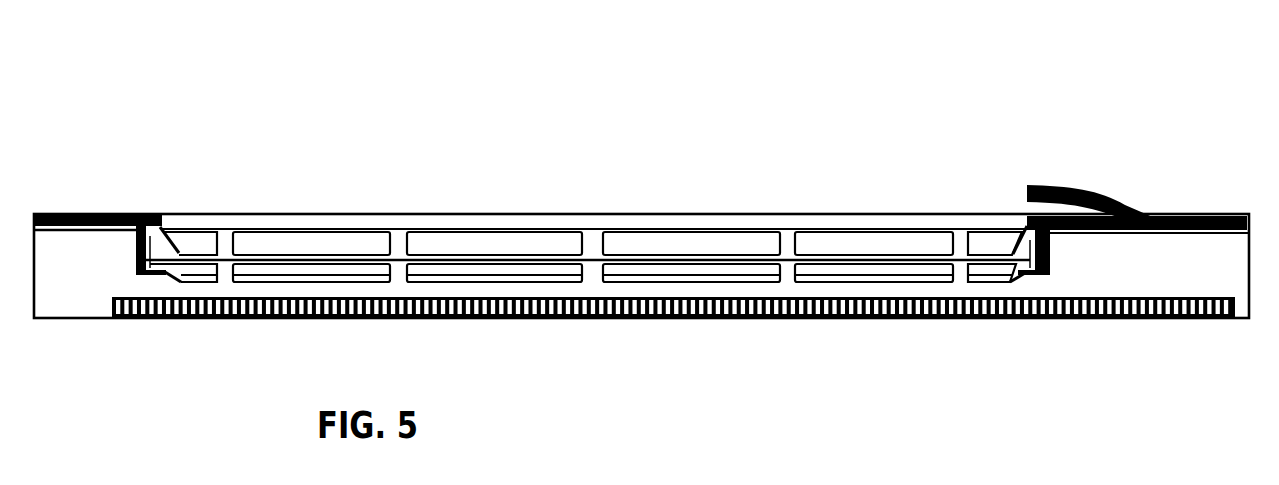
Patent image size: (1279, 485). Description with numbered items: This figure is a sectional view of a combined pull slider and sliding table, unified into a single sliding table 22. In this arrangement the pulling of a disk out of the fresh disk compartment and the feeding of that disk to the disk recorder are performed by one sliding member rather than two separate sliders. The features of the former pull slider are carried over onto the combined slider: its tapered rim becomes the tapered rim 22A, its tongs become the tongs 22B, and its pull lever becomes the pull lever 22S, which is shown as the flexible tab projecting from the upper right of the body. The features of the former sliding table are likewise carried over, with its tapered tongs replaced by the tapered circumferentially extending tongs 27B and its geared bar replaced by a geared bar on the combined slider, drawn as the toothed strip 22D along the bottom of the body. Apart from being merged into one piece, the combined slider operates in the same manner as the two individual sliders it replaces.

The sliding table 22 is at (234, 130).
The tapered rim 22A is at (1027, 225).
The tongs 22B is at (1023, 245).
The pull lever 22S is at (1057, 185).
The tapered circumferentially extending tongs 27B is at (1022, 277).
The comb / ribbed base 22D is at (1152, 318).